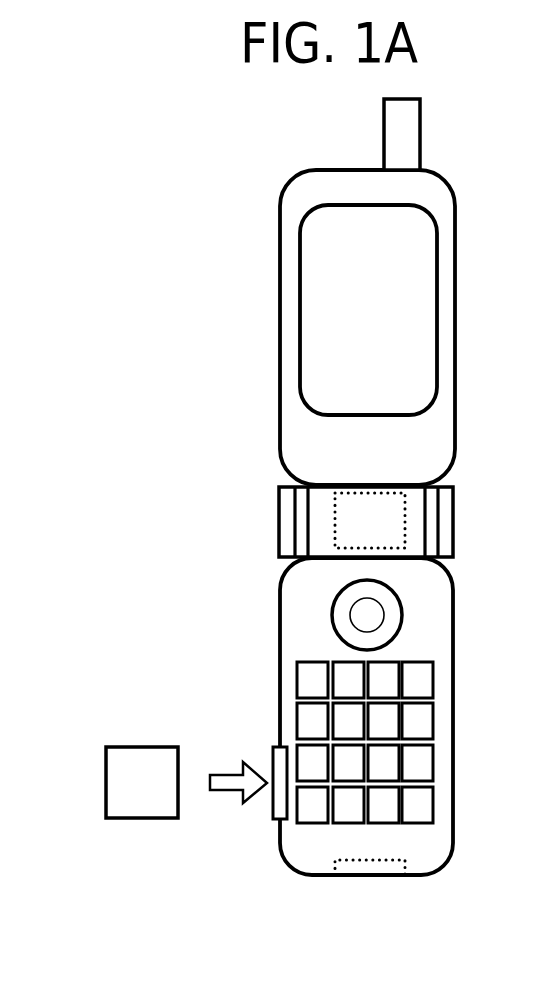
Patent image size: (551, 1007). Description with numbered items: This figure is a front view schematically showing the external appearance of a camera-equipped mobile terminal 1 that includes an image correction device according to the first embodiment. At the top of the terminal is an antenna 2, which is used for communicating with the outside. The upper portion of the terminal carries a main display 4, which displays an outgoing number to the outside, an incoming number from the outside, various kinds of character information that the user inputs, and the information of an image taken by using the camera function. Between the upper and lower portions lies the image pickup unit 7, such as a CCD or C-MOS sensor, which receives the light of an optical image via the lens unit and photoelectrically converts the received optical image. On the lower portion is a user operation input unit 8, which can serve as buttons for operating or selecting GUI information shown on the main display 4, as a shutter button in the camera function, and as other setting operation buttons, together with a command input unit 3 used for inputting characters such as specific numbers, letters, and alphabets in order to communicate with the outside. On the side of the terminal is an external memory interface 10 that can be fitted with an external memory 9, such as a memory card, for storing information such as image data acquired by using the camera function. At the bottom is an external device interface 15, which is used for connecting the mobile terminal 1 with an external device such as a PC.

The mobile terminal 1 is at (447, 862).
The antenna 2 is at (384, 155).
The command input unit 3 is at (433, 768).
The main display 4 is at (302, 310).
The image pickup unit 7 is at (405, 520).
The user operation input unit 8 is at (333, 612).
The external memory 9 is at (106, 748).
The external memory interface 10 is at (272, 750).
The external device interface 15 is at (350, 867).